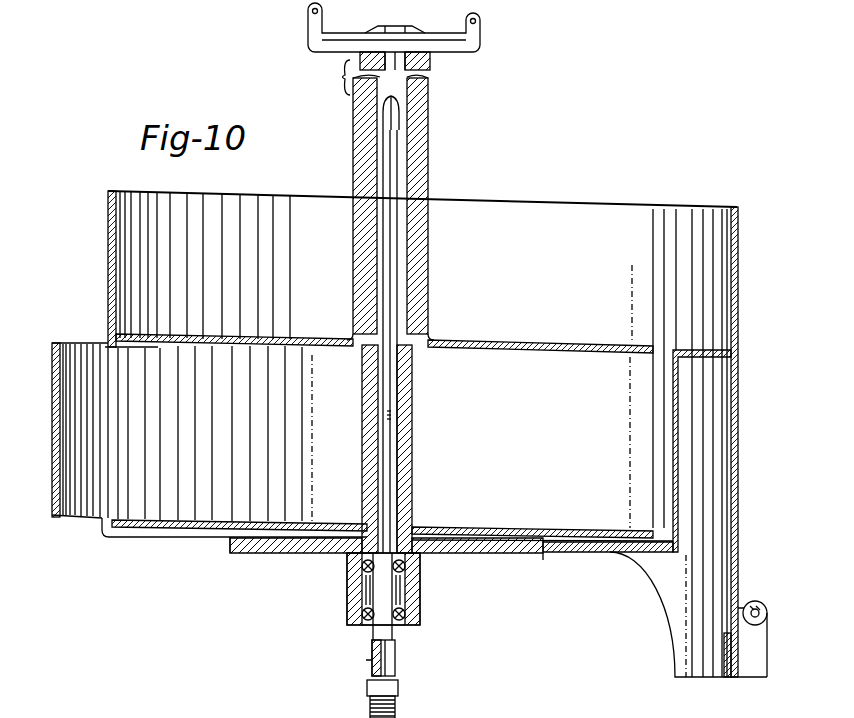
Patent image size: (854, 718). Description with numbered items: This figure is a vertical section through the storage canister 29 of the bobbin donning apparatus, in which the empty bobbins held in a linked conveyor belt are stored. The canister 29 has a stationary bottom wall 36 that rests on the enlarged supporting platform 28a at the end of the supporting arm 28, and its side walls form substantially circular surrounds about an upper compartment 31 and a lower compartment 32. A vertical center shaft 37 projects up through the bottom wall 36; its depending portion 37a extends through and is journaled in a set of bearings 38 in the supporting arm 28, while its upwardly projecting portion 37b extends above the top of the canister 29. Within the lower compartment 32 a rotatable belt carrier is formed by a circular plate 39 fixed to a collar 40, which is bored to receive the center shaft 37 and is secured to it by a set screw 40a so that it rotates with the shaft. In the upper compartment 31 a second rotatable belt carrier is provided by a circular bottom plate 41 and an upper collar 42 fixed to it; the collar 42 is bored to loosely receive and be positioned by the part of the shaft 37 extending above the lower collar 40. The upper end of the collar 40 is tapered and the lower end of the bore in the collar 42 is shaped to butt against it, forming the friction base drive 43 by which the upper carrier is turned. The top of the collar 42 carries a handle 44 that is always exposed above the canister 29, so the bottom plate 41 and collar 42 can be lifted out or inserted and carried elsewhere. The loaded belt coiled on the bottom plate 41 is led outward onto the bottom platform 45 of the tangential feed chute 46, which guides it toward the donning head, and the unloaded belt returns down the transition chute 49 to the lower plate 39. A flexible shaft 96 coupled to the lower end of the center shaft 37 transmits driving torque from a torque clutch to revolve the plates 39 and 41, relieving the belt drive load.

The handle 44 is at (482, 35).
The collar 42 is at (353, 232).
The upwardly projecting portion 37b is at (402, 140).
The center shaft 37 is at (398, 382).
The collar 40 is at (362, 437).
The set screw 40a is at (400, 415).
The circular bottom plate 41 is at (305, 338).
The friction base drive 43 is at (428, 326).
The storage canister 29 is at (108, 248).
The upper compartment 31 is at (553, 251).
The tangential feed chute 46 is at (708, 300).
The bottom platform 45 is at (712, 358).
The transition chute 49 is at (52, 406).
The lower compartment 32 is at (543, 421).
The bottom wall 36 is at (186, 548).
The circular plate 39 is at (575, 527).
The supporting platform 28a is at (498, 560).
The supporting arm 28 is at (422, 613).
The bearings 38 is at (360, 566).
The depending portion 37a is at (384, 596).
The flexible shaft 96 is at (396, 711).